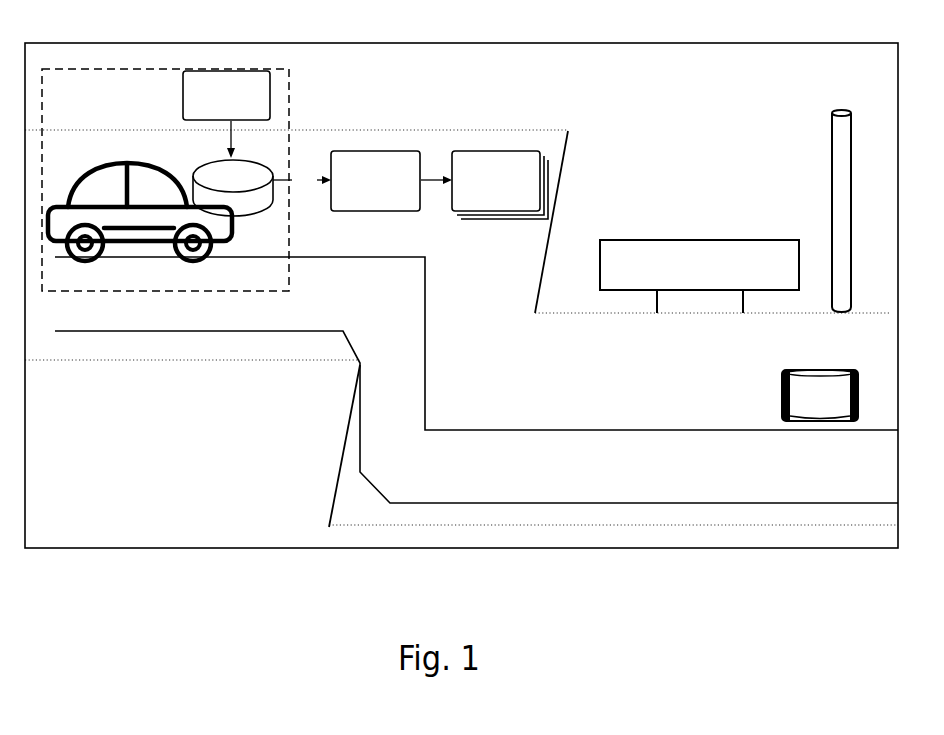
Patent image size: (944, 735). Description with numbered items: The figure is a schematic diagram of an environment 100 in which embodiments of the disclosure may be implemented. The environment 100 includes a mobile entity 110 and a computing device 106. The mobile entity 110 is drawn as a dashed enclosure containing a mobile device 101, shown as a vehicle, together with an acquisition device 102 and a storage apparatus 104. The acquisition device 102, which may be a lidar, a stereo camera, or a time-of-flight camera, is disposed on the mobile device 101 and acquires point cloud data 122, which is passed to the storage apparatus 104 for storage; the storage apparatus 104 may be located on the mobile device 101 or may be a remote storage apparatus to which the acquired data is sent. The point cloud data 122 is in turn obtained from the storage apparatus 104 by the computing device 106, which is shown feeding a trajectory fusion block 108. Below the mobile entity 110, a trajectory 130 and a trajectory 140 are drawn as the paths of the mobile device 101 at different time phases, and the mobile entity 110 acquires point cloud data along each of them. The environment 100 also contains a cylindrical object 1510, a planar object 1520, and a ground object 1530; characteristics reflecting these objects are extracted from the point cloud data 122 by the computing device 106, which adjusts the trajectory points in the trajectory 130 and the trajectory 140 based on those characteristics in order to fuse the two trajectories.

The environment 100 is at (116, 34).
The mobile entity 110 is at (122, 68).
The mobile device 101 is at (108, 163).
The acquisition device 102 is at (182, 98).
The storage apparatus 104 is at (195, 163).
The point cloud data 122 is at (276, 154).
The computing device 106 is at (356, 151).
The trajectory fusion 108 is at (484, 151).
The trajectory 130 is at (400, 257).
The trajectory 140 is at (197, 331).
The cylindrical object 1510 is at (840, 111).
The planar object 1520 is at (648, 240).
The ground object 1530 is at (706, 370).